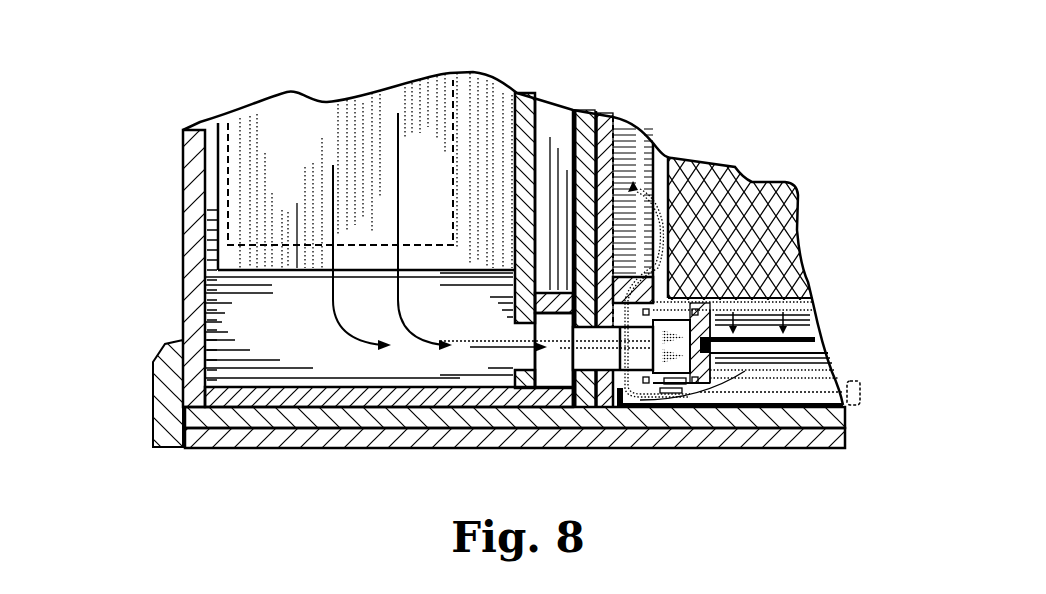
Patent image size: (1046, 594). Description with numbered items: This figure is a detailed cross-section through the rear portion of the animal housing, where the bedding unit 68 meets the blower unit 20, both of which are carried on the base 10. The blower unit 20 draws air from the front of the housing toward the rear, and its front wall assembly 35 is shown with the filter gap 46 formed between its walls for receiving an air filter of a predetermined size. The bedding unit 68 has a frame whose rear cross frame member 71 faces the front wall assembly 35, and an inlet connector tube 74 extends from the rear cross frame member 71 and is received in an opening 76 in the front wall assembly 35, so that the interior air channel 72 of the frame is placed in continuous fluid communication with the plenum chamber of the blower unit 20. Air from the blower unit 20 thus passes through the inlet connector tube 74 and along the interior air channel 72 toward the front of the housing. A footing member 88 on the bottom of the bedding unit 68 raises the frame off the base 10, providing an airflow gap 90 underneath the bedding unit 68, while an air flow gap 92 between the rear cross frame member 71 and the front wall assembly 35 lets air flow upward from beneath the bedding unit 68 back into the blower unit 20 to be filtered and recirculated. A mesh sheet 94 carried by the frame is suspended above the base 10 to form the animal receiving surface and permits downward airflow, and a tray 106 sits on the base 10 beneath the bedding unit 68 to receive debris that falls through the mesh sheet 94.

The base 10 is at (183, 437).
The blower unit 20 is at (193, 223).
The front wall assembly 35 is at (600, 108).
The filter gap 46 is at (552, 128).
The bedding unit 68 is at (818, 316).
The rear cross frame member 71 is at (706, 374).
The interior air channel 72 is at (669, 365).
The inlet connector tube 74 is at (603, 357).
The opening 76 is at (570, 363).
The footing member 88 is at (664, 390).
The airflow gap 90 is at (860, 393).
The air flow gap 92 is at (632, 291).
The mesh sheet 94 is at (793, 307).
The tray 106 is at (628, 405).